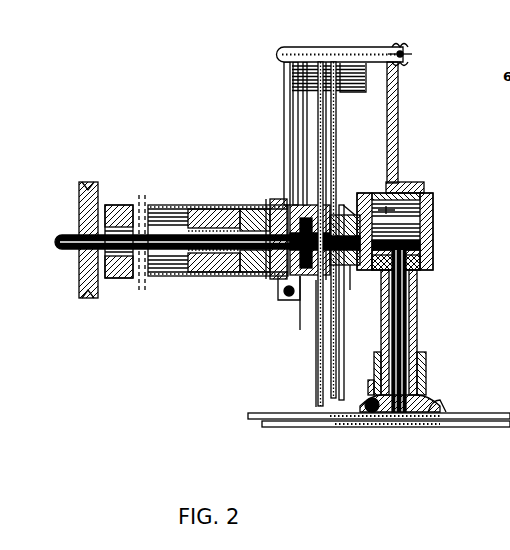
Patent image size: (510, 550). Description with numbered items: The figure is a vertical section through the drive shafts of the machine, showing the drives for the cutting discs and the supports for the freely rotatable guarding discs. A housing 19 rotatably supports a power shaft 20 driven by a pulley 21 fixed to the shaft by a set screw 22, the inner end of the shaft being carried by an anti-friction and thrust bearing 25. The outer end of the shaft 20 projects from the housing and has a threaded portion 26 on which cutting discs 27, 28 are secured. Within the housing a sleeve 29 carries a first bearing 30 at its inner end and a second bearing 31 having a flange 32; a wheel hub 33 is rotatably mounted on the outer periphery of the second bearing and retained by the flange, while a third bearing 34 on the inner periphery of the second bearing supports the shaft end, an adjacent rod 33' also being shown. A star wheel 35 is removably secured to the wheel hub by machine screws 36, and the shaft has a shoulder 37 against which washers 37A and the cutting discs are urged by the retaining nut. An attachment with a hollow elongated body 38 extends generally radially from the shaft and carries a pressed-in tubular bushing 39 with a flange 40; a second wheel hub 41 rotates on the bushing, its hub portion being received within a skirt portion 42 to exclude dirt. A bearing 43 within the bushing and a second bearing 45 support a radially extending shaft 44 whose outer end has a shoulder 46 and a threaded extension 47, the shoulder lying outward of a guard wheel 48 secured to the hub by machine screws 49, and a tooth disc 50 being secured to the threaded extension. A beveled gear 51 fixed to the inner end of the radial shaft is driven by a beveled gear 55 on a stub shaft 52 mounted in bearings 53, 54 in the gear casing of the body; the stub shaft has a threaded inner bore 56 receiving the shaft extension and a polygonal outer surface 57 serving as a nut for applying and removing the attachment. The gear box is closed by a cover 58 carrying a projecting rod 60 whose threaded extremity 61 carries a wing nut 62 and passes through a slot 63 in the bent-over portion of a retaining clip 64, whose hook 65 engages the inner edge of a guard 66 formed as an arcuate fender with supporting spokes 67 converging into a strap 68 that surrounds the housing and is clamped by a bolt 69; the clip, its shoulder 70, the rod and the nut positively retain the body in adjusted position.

The housing 19 is at (163, 209).
The power shaft 20 is at (172, 276).
The pulley 21 is at (79, 282).
The set screw 22 is at (68, 232).
The anti-friction and thrust bearing 25 is at (120, 205).
The threaded portion 26 is at (338, 152).
The cutting disc 27 is at (323, 135).
The cutting disc 28 is at (336, 120).
The sleeve 29 is at (216, 272).
The first bearing 30 is at (192, 209).
The second bearing 31 is at (236, 209).
The flange 32 is at (278, 286).
The wheel hub 33 is at (290, 309).
The rod 33' is at (245, 215).
The third bearing 34 is at (270, 205).
The star wheel 35 is at (303, 99).
The machine screws 36 is at (288, 198).
The shoulder 37 is at (337, 300).
The washers 37A is at (316, 336).
The hollow elongated body 38 is at (417, 302).
The tubular bushing 39 is at (426, 386).
The flange 40 is at (436, 402).
The second wheel hub 41 is at (370, 398).
The skirt portion 42 is at (372, 380).
The bearing 43 is at (426, 362).
The radially extending shaft 44 is at (406, 330).
The second bearing 45 is at (420, 275).
The shoulder 46 is at (410, 428).
The threaded extension 47 is at (392, 428).
The guard wheel 48 is at (330, 420).
The machine screws 49 is at (364, 428).
The tooth disc 50 is at (470, 428).
The beveled gear 51 is at (433, 248).
The stub shaft 52 is at (433, 230).
The bearing 53 is at (433, 214).
The bearing 54 is at (350, 266).
The beveled gear 55 is at (391, 212).
The threaded inner bore 56 is at (344, 266).
The polygonal outer surface 57 is at (346, 205).
The cover 58 is at (410, 183).
The rod 60 is at (398, 116).
The threaded extremity 61 is at (398, 44).
The wing nut 62 is at (382, 47).
The slot 63 is at (410, 56).
The retaining clip 64 is at (333, 47).
The hook 65 is at (282, 52).
The guard 66 is at (292, 47).
The supporting spokes 67 is at (293, 120).
The strap 68 is at (296, 205).
The bolt 69 is at (285, 299).
The shoulder 70 is at (366, 66).